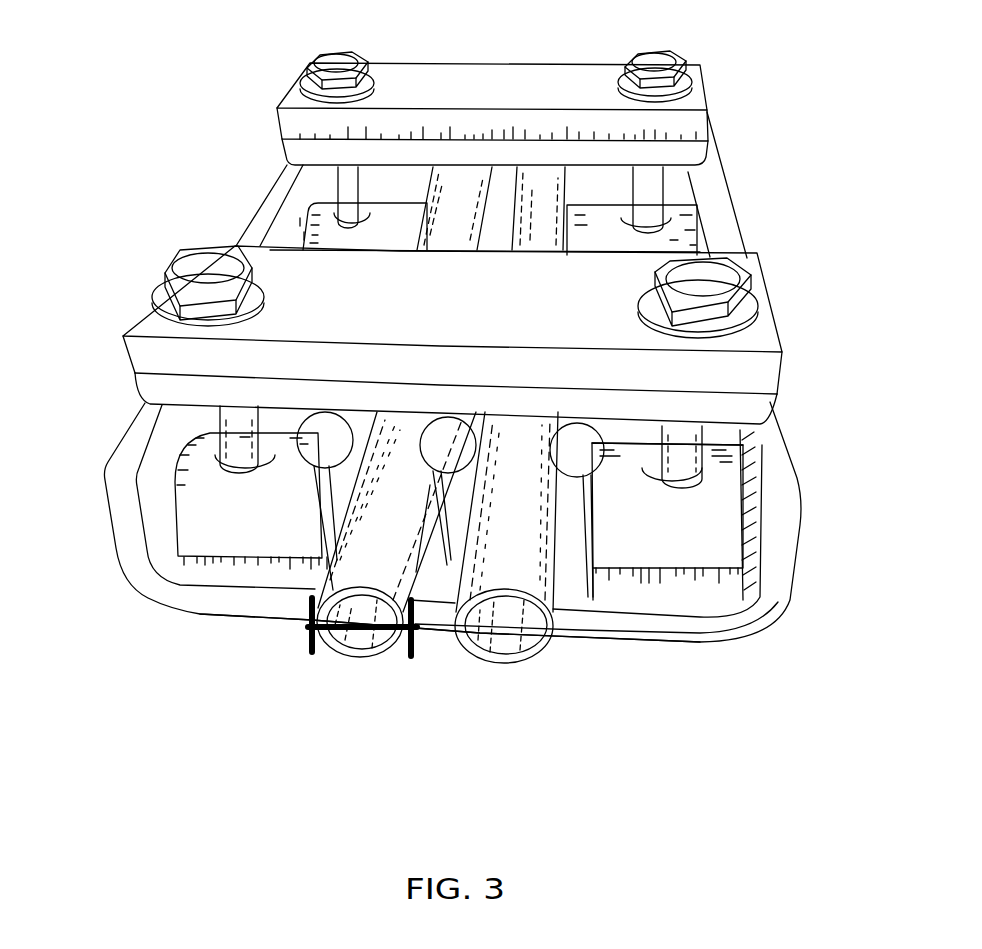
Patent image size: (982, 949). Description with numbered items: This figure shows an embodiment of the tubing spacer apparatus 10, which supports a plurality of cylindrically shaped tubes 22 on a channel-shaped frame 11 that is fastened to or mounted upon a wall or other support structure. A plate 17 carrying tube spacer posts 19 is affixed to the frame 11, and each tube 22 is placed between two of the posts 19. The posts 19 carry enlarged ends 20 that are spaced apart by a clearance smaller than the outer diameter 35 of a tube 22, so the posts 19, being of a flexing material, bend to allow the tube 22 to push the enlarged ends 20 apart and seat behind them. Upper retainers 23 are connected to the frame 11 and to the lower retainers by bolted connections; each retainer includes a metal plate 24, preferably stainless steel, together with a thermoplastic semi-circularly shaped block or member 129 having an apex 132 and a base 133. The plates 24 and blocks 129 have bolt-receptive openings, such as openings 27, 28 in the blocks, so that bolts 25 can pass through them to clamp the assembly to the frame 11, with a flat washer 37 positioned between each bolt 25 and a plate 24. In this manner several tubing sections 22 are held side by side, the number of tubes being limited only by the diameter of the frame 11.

The tubing spacer apparatus 10 is at (132, 636).
The frame/channel 11 is at (132, 548).
The plate 17 is at (603, 597).
The tube spacer post 19 is at (328, 513).
The spherical end/enlarged diameter portion 20 is at (342, 454).
The tube/tubing section 22 is at (402, 539).
The upper retainer 23 is at (158, 385).
The plate 24 is at (152, 325).
The bolt 25 is at (337, 190).
The opening 27 is at (260, 460).
The opening 28 is at (655, 465).
The outer diameter 35 is at (373, 633).
The flat washer 37 is at (265, 272).
The thermoplastic semi-circular block/member 129 is at (687, 153).
The apex of block 129 132 is at (720, 470).
The base of block 129 133 is at (778, 395).